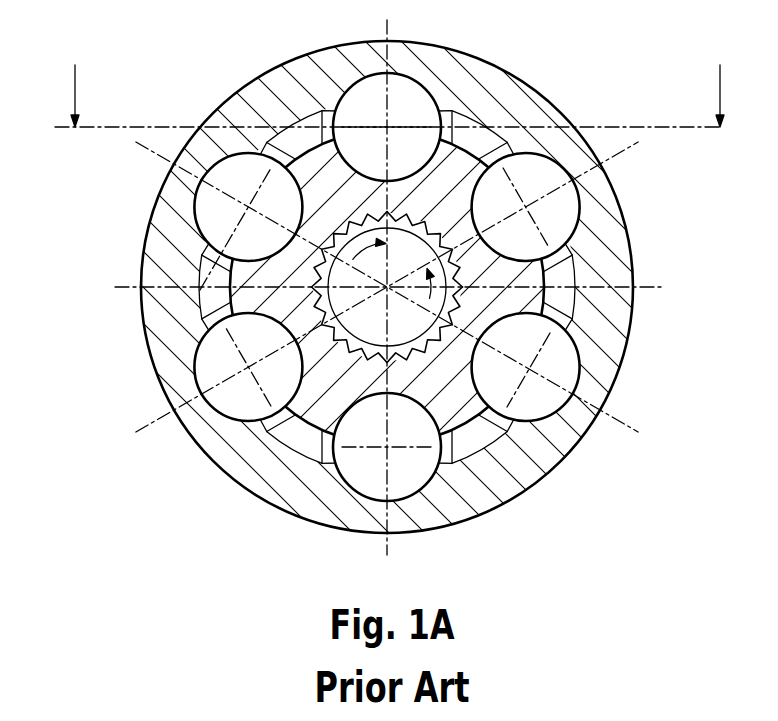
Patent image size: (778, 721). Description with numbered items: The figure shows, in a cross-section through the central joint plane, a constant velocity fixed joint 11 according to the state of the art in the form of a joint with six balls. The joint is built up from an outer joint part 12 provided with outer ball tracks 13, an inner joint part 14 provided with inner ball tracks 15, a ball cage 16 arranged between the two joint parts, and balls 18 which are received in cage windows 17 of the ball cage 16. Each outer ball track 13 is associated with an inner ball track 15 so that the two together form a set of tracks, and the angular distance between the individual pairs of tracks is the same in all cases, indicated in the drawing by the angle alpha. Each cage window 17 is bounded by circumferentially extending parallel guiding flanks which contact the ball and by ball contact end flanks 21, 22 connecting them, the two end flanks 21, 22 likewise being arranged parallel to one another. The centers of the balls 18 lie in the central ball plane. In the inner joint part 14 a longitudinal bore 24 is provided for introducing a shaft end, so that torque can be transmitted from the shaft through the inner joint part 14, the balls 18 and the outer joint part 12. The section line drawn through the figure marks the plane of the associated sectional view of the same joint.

The constant velocity fixed joint 11 is at (98, 353).
The outer joint part 12 is at (618, 233).
The outer ball tracks 13 is at (584, 380).
The inner joint part 14 is at (458, 165).
The inner ball tracks 15 is at (517, 420).
The ball cage 16 is at (577, 270).
The cage windows 17 is at (567, 325).
The balls 18 is at (548, 408).
The ball contact end flank 21 is at (447, 477).
The ball contact end flank 22 is at (333, 462).
The longitudinal bore 24 is at (420, 345).